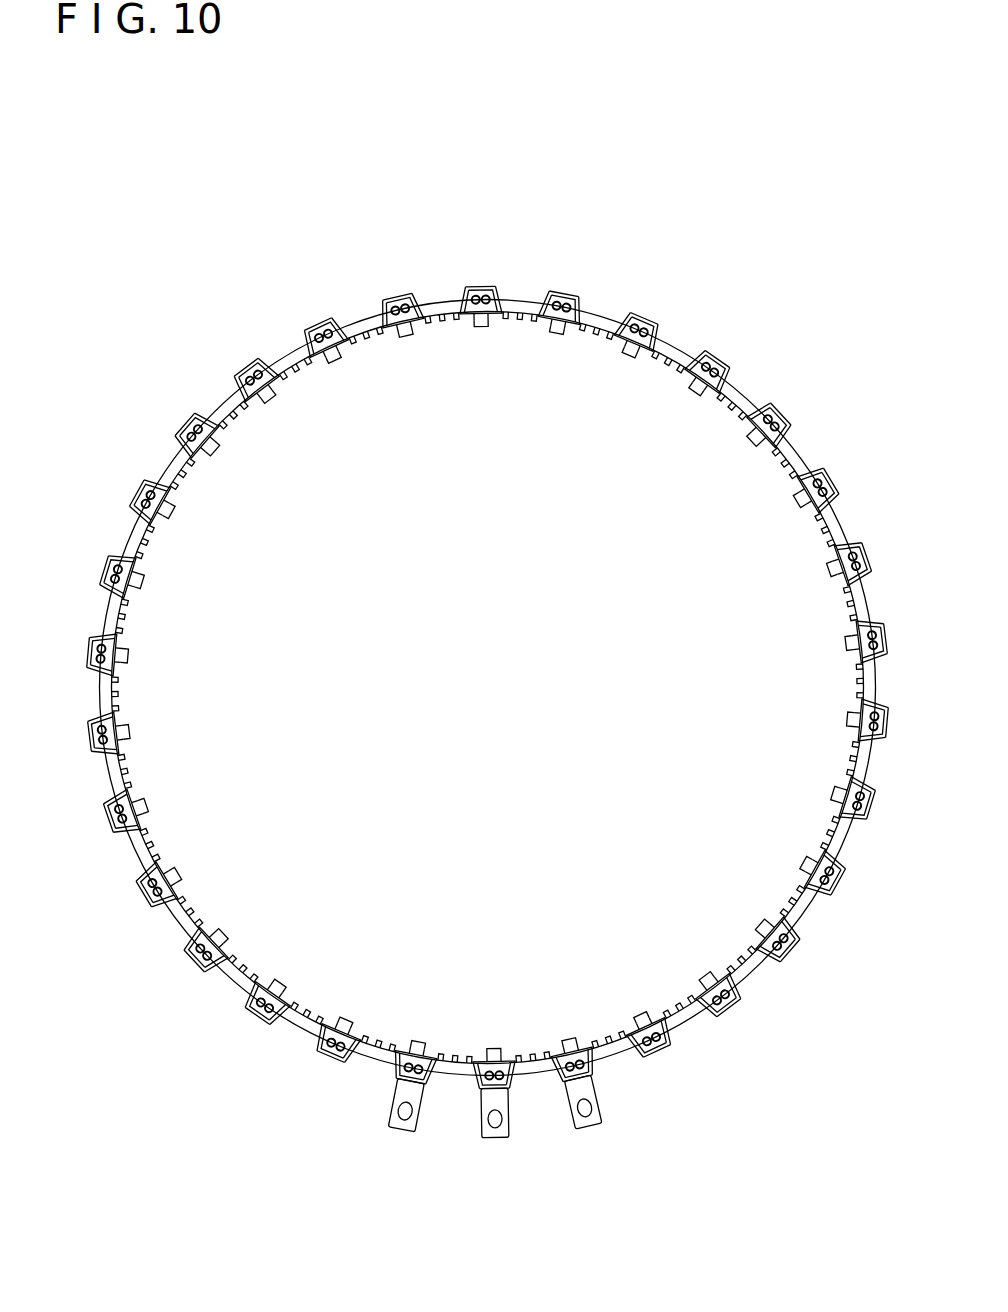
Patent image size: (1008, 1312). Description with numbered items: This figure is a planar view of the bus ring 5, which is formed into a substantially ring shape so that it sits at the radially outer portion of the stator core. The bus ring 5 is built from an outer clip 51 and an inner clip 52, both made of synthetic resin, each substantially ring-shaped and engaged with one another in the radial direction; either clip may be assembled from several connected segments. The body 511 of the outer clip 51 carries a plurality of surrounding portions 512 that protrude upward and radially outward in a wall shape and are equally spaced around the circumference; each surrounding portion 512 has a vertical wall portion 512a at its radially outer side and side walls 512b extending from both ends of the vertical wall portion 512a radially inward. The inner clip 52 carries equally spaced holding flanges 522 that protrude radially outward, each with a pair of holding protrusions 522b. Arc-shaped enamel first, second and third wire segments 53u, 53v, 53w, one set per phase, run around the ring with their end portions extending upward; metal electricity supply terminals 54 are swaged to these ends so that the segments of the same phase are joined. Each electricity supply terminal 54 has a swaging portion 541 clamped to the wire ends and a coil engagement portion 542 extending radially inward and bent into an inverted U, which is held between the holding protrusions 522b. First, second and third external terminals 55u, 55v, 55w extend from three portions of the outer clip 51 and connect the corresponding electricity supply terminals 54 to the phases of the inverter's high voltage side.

The bus ring 5 is at (150, 252).
The outer clip 51 is at (737, 397).
The outer clip body 511 is at (170, 468).
The surrounding portion 512 is at (418, 306).
The vertical wall portion 512a is at (240, 362).
The side walls 512b is at (235, 385).
The inner clip 52 is at (783, 473).
The holding flange 522 is at (322, 362).
The holding protrusions 522b is at (402, 335).
The first wire segments 53u is at (555, 300).
The second wire segments 53v is at (707, 363).
The third wire segments 53w is at (638, 317).
The electricity supply terminal 54 is at (622, 353).
The swaging portion 541 is at (688, 380).
The coil engagement portion 542 is at (703, 405).
The first external terminal 55u is at (600, 1122).
The second external terminal 55v is at (395, 1123).
The third external terminal 55w is at (495, 1133).